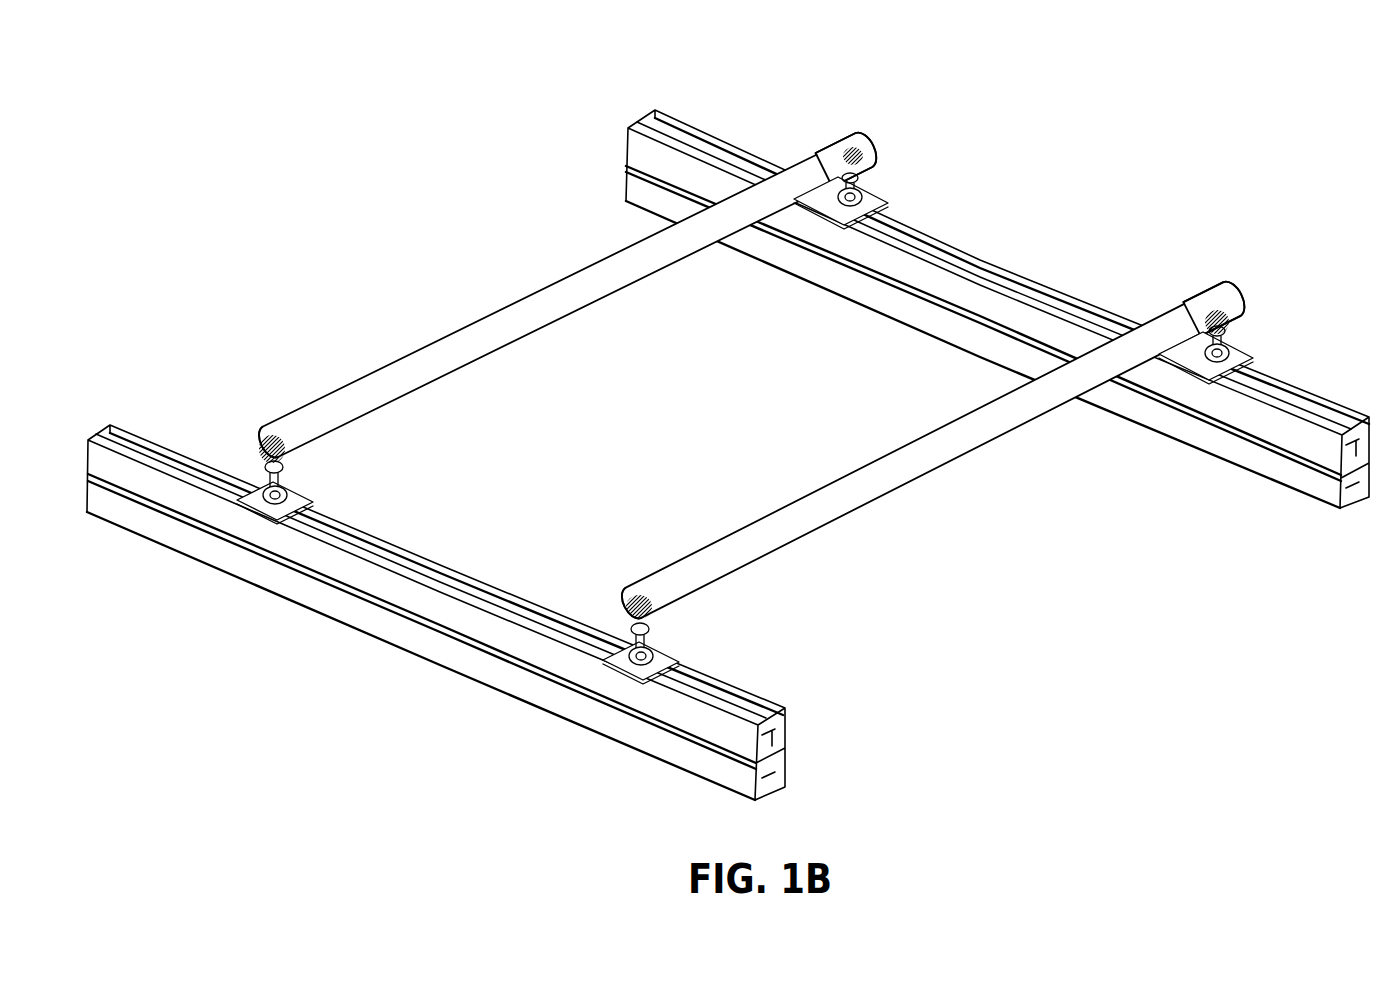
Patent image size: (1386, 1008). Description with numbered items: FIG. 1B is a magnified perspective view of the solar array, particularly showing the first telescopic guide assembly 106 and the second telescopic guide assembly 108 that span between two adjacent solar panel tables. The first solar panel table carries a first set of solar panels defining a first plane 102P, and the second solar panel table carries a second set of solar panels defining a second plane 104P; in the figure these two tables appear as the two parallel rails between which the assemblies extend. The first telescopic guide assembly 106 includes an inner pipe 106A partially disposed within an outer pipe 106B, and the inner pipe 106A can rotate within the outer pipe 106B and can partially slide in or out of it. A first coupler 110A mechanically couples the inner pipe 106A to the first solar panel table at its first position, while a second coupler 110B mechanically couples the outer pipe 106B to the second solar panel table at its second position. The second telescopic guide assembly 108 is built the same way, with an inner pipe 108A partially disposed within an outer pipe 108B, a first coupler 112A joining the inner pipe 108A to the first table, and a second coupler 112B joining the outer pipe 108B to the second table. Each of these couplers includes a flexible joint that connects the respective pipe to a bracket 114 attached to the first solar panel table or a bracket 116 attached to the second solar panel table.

The first plane 102P is at (997, 309).
The second plane 104P is at (436, 612).
The first telescopic guide assembly 106 is at (492, 240).
The inner pipe 106A is at (828, 153).
The outer pipe 106B is at (397, 372).
The second telescopic guide assembly 108 is at (847, 428).
The inner pipe 108A is at (1202, 300).
The outer pipe 108B is at (772, 522).
The first coupler 110A is at (883, 172).
The second coupler 110B is at (246, 464).
The first coupler 112A is at (1252, 326).
The second coupler 112B is at (601, 615).
The bracket 114 is at (1028, 268).
The bracket 116 is at (448, 563).